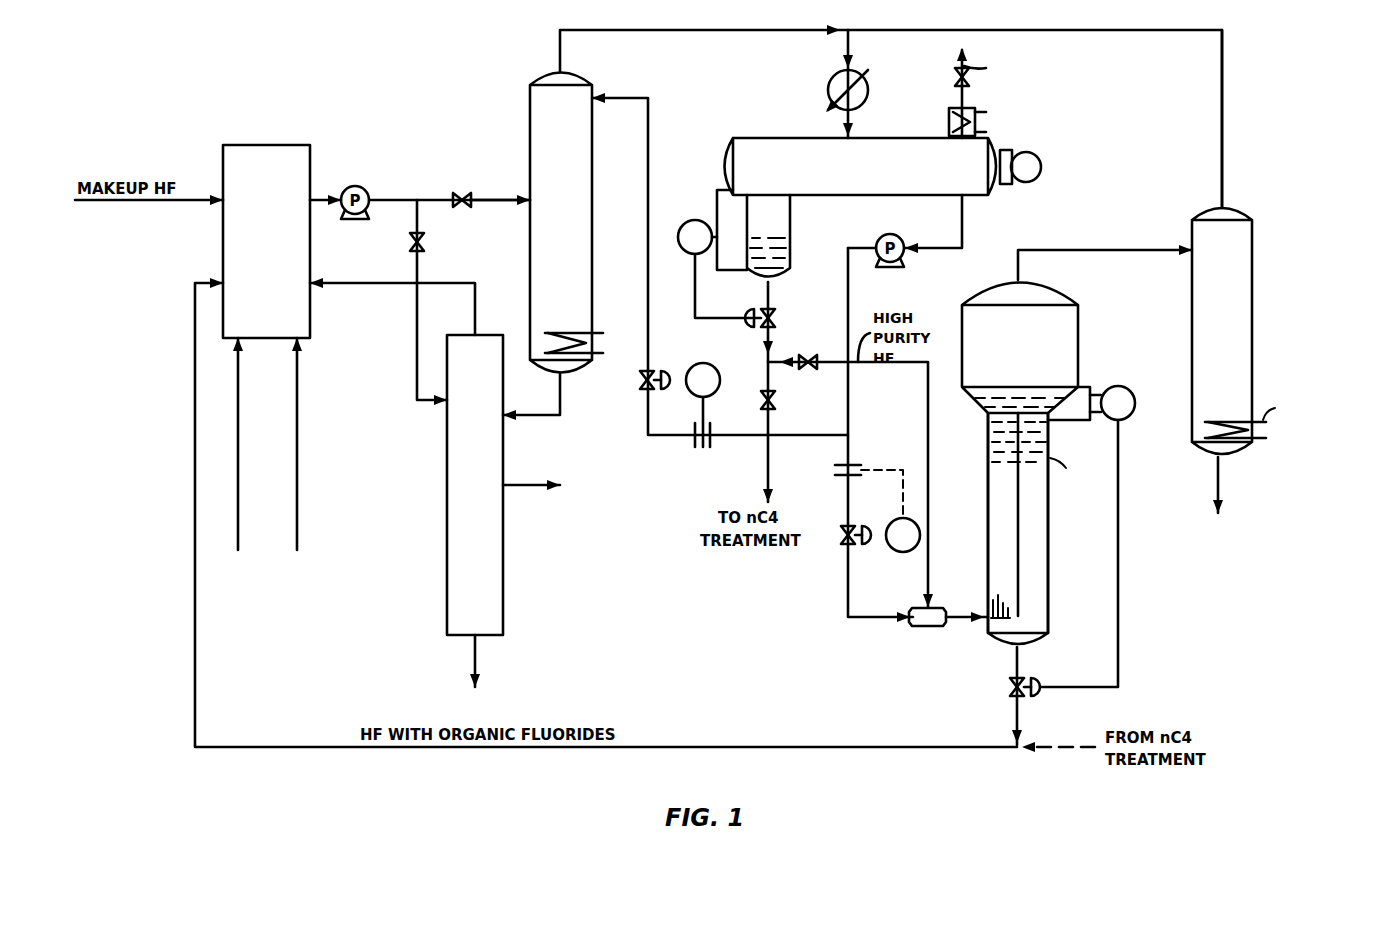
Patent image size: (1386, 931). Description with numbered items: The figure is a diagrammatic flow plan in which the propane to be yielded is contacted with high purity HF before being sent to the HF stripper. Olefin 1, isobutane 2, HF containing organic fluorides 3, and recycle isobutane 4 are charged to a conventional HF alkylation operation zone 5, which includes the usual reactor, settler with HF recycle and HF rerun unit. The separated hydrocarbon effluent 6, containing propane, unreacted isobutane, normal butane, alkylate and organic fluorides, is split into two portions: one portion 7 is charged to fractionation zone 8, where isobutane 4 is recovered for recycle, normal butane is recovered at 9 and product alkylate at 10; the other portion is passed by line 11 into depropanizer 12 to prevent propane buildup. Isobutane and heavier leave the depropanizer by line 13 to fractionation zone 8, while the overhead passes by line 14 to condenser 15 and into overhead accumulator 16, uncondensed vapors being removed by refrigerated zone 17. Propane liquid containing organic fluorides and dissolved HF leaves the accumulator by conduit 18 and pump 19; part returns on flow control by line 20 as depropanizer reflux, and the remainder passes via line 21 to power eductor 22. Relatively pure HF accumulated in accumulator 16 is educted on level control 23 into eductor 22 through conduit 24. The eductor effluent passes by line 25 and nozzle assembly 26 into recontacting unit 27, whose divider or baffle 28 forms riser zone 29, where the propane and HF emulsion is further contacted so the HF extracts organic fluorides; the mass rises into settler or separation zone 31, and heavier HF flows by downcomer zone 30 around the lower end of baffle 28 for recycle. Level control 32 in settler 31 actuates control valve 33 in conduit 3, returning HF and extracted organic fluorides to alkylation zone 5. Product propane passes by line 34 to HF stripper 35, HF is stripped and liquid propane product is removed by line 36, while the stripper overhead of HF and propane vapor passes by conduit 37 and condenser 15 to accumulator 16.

The olefin 1 is at (240, 548).
The isobutane 2 is at (299, 548).
The HF containing organic fluorides 3 is at (197, 665).
The recycle isobutane 4 is at (477, 293).
The HF alkylation operation zone 5 is at (258, 166).
The hydrocarbon effluent 6 is at (385, 199).
The portion of effluent 7 is at (417, 377).
The fractionation zone 8 is at (468, 354).
The normal butane outlet 9 is at (520, 484).
The product alkylate outlet 10 is at (477, 665).
The depropanizer feed line 11 is at (488, 199).
The depropanizer 12 is at (572, 109).
The depropanizer bottoms line 13 is at (562, 408).
The depropanizer overhead line 14 is at (562, 50).
The condenser 15 is at (868, 90).
The overhead accumulator 16 is at (972, 177).
The refrigerated zone 17 is at (977, 118).
The conduit 18 is at (965, 226).
The pump 19 is at (905, 256).
The reflux line 20 is at (650, 122).
The propane line to eductor 21 is at (846, 592).
The power eductor 22 is at (912, 628).
The level control 23 is at (690, 222).
The HF conduit 24 is at (925, 388).
The eductor effluent line 25 is at (952, 630).
The nozzle assembly 26 is at (990, 600).
The recontacting unit 27 is at (978, 478).
The divider or baffle 28 is at (1020, 568).
The riser zone 29 is at (1014, 526).
The downcomer zone 30 is at (1044, 500).
The settler or separation zone 31 is at (1026, 355).
The level control 32 is at (1122, 390).
The control valve 33 is at (1006, 689).
The product propane line 34 is at (1078, 250).
The HF stripper 35 is at (1233, 243).
The liquid propane product outlet 36 is at (1212, 480).
The stripper overhead conduit 37 is at (1220, 107).